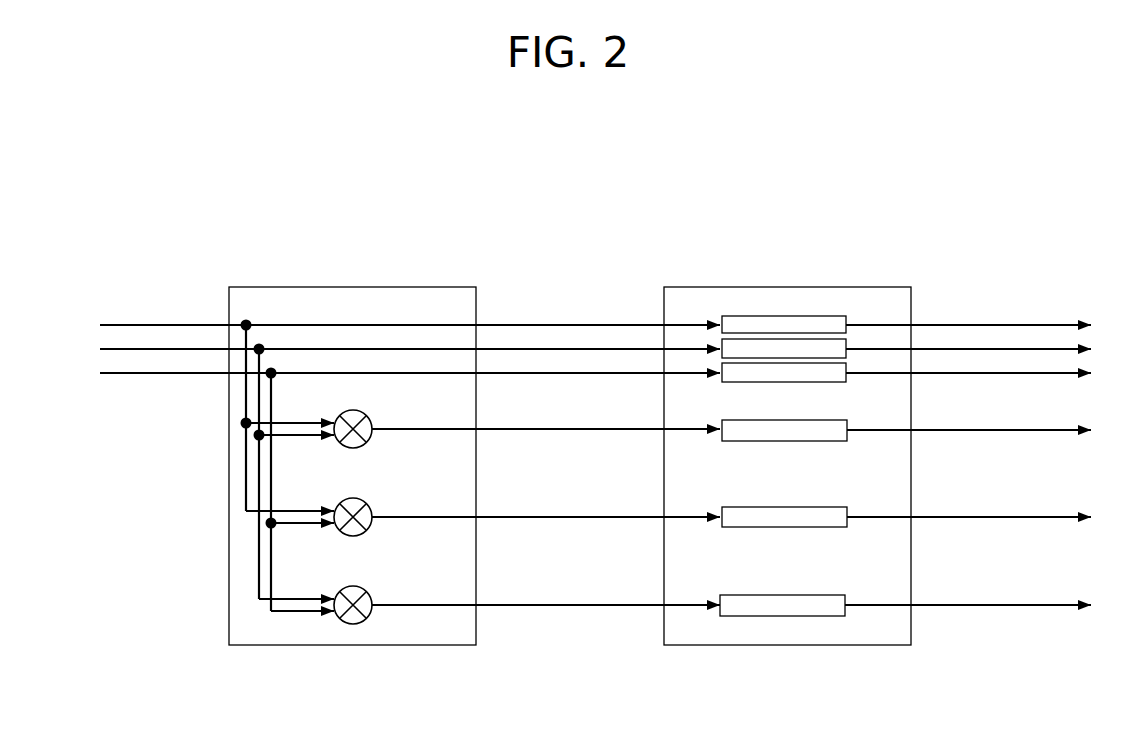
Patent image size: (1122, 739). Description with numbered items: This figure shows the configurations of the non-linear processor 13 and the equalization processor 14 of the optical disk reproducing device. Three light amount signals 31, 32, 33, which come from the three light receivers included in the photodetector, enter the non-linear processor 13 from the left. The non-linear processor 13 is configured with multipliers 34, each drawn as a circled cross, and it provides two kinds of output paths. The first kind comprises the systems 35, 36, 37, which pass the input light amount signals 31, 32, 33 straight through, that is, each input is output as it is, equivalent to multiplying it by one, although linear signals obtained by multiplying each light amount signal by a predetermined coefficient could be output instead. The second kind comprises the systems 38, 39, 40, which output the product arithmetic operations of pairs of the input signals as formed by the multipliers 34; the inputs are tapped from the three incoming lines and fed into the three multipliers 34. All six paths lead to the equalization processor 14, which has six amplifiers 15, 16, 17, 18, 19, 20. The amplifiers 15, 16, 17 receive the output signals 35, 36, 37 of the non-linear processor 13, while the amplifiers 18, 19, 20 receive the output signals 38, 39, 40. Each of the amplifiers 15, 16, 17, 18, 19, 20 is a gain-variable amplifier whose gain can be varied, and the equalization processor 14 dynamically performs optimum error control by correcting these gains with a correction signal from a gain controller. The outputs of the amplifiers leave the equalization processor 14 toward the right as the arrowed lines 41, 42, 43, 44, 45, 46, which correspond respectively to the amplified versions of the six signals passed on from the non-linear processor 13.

The non-linear processor 13 is at (278, 645).
The equalization processor 14 is at (758, 645).
The amplifier 15 is at (729, 325).
The amplifier 16 is at (767, 349).
The amplifier 17 is at (817, 373).
The amplifier 18 is at (766, 441).
The amplifier 19 is at (766, 527).
The amplifier 20 is at (817, 593).
The light amount signal 31 is at (140, 325).
The light amount signal 32 is at (178, 349).
The light amount signal 33 is at (112, 373).
The multiplier 34 is at (348, 633).
The system 35 is at (497, 325).
The system 36 is at (556, 349).
The system 37 is at (609, 373).
The system 38 is at (568, 432).
The system 39 is at (568, 519).
The system 40 is at (568, 607).
The output signal 41 is at (967, 325).
The output signal 42 is at (1011, 349).
The output signal 43 is at (1046, 373).
The output signal 44 is at (1034, 432).
The output signal 45 is at (1034, 519).
The output signal 46 is at (1034, 607).